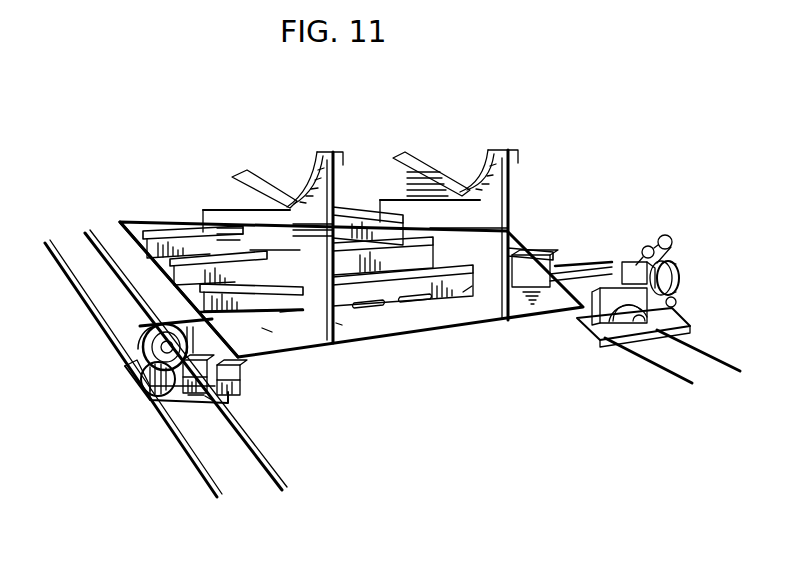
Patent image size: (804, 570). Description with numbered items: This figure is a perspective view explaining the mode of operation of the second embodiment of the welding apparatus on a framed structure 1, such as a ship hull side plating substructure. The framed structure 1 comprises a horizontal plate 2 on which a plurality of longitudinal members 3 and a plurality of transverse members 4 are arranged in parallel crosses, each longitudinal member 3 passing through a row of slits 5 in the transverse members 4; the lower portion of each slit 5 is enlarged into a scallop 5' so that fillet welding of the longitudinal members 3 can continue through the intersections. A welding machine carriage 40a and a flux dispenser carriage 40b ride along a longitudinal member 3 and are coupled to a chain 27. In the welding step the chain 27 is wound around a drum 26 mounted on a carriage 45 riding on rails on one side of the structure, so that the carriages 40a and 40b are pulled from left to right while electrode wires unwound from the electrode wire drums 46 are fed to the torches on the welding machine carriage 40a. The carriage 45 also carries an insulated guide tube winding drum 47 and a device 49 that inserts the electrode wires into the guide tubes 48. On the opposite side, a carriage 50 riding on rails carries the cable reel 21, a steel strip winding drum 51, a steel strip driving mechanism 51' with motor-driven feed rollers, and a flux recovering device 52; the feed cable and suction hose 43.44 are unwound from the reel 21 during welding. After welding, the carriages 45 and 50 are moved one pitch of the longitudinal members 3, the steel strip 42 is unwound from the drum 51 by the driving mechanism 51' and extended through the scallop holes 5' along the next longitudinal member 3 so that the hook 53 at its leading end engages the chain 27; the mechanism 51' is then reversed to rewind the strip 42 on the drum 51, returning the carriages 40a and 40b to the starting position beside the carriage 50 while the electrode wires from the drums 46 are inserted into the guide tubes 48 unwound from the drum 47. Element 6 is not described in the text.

The framed structure 1 is at (350, 148).
The horizontal plate 2 is at (490, 319).
The longitudinal members 3 is at (281, 297).
The transverse members 4 is at (340, 326).
The slits 5 is at (471, 307).
The scallop 5' is at (298, 344).
The frame 6 is at (191, 288).
The cable reel 21 is at (150, 331).
The drum 26 is at (618, 320).
The chain 27 is at (558, 287).
The welding machine carriage 40a is at (413, 301).
The flux dispenser carriage 40b is at (364, 306).
The steel strip 42 is at (204, 403).
The cable and suction hose 43.44 is at (265, 330).
The carriage 45 is at (686, 316).
The electrode wire drums 46 is at (648, 245).
The insulated guide tube winding drum 47 is at (681, 277).
The guide tubes 48 is at (659, 262).
The device 49 is at (629, 265).
The carriage 50 is at (160, 403).
The steel strip winding drum 51 is at (166, 363).
The steel strip driving mechanism 51' is at (221, 437).
The flux recovering device 52 is at (236, 374).
The hook 53 is at (232, 396).